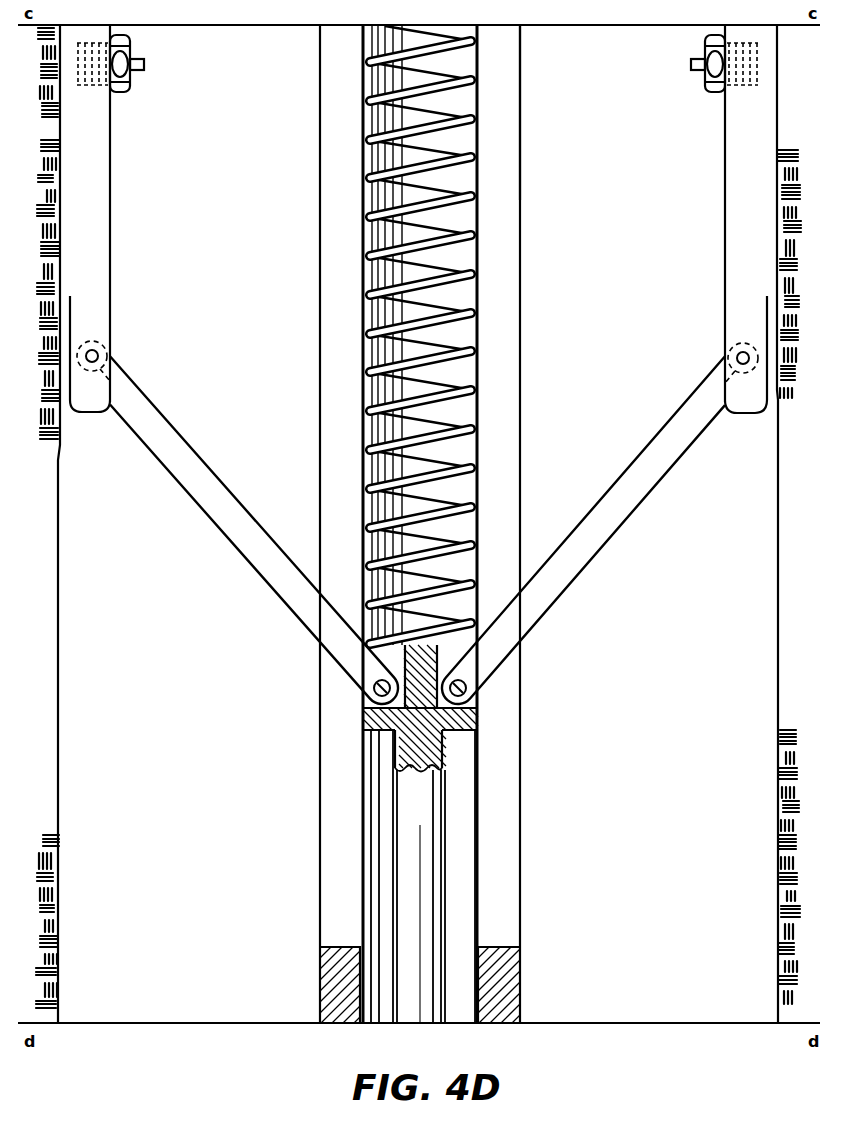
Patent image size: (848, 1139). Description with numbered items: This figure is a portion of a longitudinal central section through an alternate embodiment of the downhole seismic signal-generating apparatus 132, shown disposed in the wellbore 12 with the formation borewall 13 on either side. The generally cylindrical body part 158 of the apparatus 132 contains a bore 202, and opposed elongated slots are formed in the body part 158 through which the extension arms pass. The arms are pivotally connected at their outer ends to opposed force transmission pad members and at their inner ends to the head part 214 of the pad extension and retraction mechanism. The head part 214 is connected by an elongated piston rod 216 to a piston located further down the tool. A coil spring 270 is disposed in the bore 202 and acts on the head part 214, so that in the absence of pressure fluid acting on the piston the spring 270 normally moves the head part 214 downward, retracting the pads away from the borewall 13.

The wellbore 12 is at (70, 737).
The borewall 13 is at (62, 625).
The downhole seismic signal-generating apparatus 132 is at (528, 816).
The body part 158 is at (521, 97).
The bore 202 is at (480, 186).
The head part 214 is at (466, 733).
The piston rod 216 is at (445, 868).
The coil spring 270 is at (360, 178).